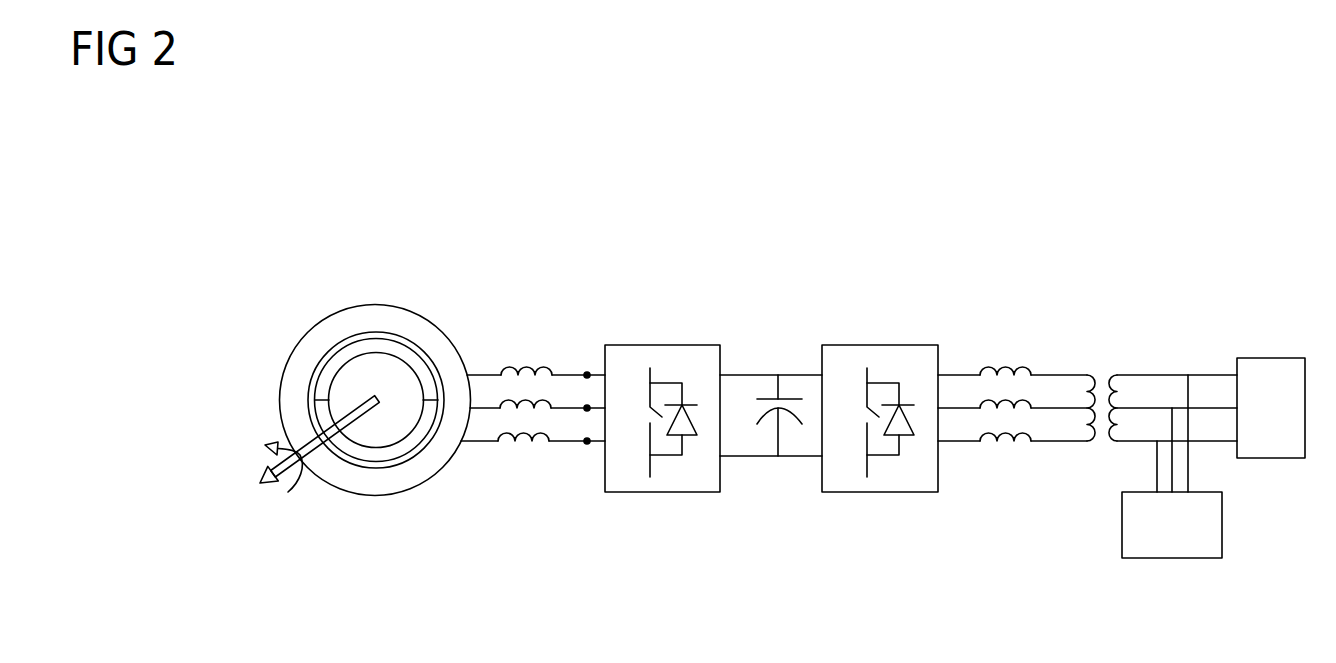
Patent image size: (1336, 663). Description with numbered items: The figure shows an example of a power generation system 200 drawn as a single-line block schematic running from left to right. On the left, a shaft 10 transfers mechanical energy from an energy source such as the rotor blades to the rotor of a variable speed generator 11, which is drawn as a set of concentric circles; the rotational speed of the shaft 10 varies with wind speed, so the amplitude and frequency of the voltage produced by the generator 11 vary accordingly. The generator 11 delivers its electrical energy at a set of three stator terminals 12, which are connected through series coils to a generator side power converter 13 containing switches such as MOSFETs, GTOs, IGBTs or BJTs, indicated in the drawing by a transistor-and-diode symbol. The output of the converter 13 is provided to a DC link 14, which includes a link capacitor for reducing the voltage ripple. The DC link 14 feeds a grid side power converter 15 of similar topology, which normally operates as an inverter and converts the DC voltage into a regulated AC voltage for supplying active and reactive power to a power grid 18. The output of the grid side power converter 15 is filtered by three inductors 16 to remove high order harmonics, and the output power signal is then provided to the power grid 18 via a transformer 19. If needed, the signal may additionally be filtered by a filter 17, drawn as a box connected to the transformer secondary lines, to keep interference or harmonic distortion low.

The power generation system 200 is at (1148, 142).
The shaft 10 is at (266, 489).
The variable speed generator 11 is at (309, 332).
The stator terminals 12 is at (582, 440).
The generator side power converter 13 is at (675, 357).
The DC link 14 is at (780, 375).
The grid side power converter 15 is at (890, 358).
The inductors 16 is at (1013, 437).
The filter 17 is at (1158, 542).
The power grid 18 is at (1275, 373).
The transformer 19 is at (1104, 383).